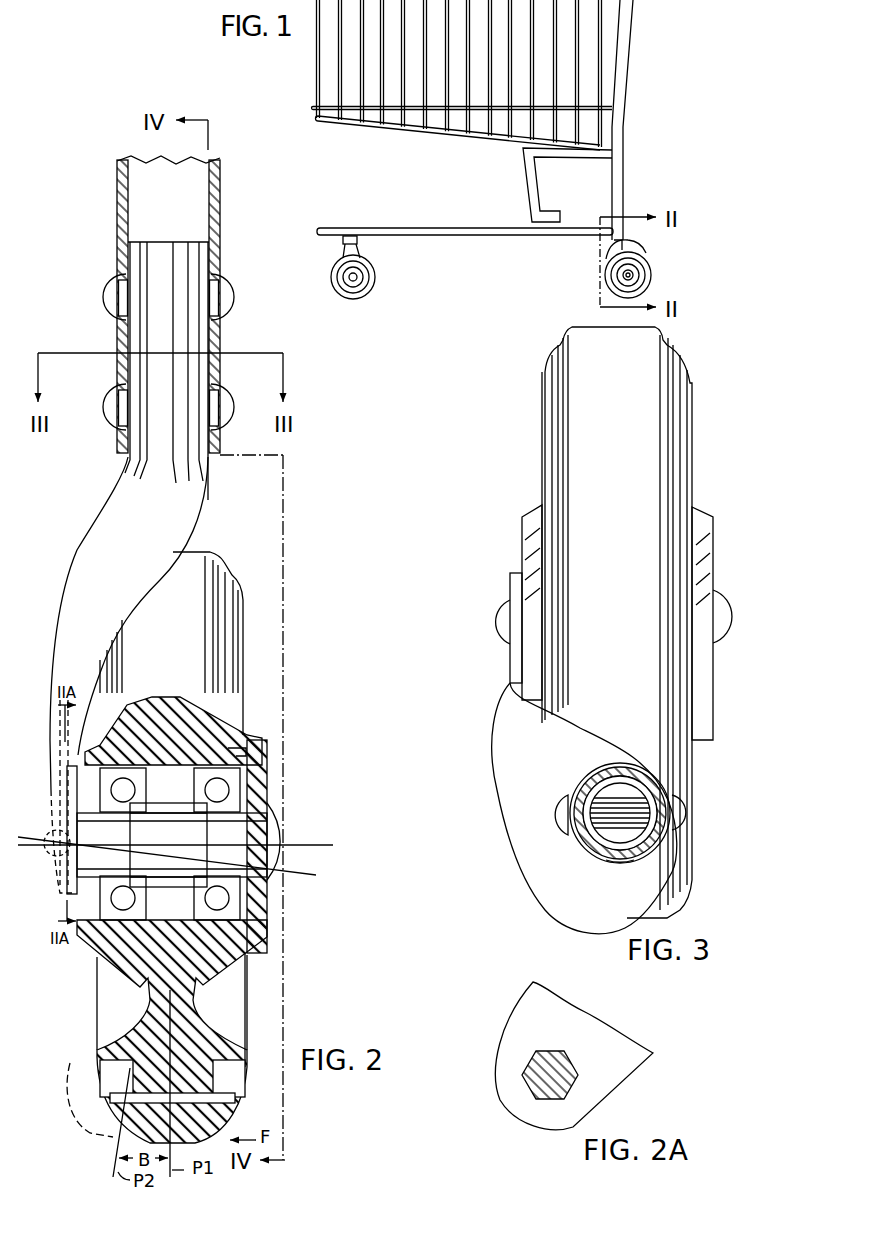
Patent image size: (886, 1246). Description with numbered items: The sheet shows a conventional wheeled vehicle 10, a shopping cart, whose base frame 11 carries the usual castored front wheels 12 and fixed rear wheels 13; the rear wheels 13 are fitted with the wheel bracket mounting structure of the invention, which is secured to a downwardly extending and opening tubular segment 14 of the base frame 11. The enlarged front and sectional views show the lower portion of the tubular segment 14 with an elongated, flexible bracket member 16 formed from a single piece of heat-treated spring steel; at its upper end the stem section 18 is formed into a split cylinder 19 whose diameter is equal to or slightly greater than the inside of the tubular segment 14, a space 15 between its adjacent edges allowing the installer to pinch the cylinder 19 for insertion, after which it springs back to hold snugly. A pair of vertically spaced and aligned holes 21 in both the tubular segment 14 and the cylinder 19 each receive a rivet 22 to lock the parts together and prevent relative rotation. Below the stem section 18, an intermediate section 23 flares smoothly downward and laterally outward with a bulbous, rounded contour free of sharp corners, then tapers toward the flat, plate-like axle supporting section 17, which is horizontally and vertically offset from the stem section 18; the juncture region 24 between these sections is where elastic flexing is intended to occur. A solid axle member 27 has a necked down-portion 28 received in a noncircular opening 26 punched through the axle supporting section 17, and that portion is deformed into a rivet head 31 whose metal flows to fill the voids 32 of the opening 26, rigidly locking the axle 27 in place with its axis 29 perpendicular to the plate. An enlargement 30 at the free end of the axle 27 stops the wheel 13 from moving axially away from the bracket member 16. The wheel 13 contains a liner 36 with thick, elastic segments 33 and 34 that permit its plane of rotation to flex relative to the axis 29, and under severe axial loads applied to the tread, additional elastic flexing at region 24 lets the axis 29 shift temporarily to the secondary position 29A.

In FIG. 1, the wheeled vehicle 10 is at (636, 105).
In FIG. 1, the base frame 11 is at (461, 220).
In FIG. 1, the front wheels 12 is at (377, 277).
In FIG. 1, the rear wheels 13 is at (652, 273).
In FIG. 2, the rear wheels 13 is at (236, 572).
In FIG. 3, the rear wheels 13 is at (697, 437).
In FIG. 1, the tubular segment 14 is at (622, 232).
In FIG. 2, the tubular segment 14 is at (219, 229).
In FIG. 3, the tubular segment 14 is at (657, 790).
In FIG. 3, the space 15 is at (680, 810).
In FIG. 1, the bracket member 16 is at (604, 258).
In FIG. 2, the bracket member 16 is at (111, 510).
In FIG. 3, the bracket member 16 is at (506, 858).
In FIG. 2A, the bracket member 16 is at (489, 1069).
In FIG. 2, the axle supporting section 17 is at (52, 823).
In FIG. 3, the axle supporting section 17 is at (507, 582).
In FIG. 2A, the axle supporting section 17 is at (624, 1076).
In FIG. 2, the stem section 18 is at (99, 313).
In FIG. 3, the stem section 18 is at (617, 866).
In FIG. 2, the split cylinder 19 is at (161, 257).
In FIG. 3, the split cylinder 19 is at (622, 778).
In FIG. 2, the holes 21 is at (214, 312).
In FIG. 2, the rivet 22 is at (229, 293).
In FIG. 3, the rivet 22 is at (560, 814).
In FIG. 2, the intermediate section 23 is at (78, 570).
In FIG. 3, the intermediate section 23 is at (505, 777).
In FIG. 2, the juncture region 24 is at (54, 780).
In FIG. 2A, the noncircular opening 26 is at (547, 1053).
In FIG. 2, the axle member 27 is at (259, 834).
In FIG. 2A, the axle member 27 is at (530, 1092).
In FIG. 2A, the necked down-portion 28 is at (535, 1100).
In FIG. 2, the axis 29 is at (303, 844).
In FIG. 2, the secondary position of the axis 29A is at (313, 874).
In FIG. 2, the enlargement 30 is at (269, 816).
In FIG. 3, the enlargement 30 is at (722, 612).
In FIG. 2, the rivet head 31 is at (56, 858).
In FIG. 3, the rivet head 31 is at (500, 618).
In FIG. 2A, the voids 32 is at (578, 1075).
In FIG. 2, the elastic segment 33 is at (128, 707).
In FIG. 2, the elastic segment 34 is at (181, 700).
In FIG. 2, the liner 36 is at (241, 751).